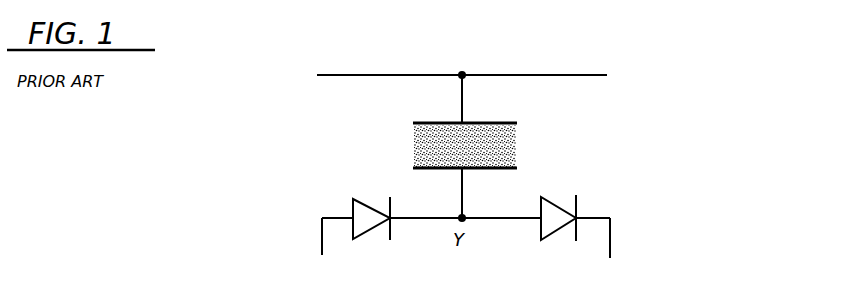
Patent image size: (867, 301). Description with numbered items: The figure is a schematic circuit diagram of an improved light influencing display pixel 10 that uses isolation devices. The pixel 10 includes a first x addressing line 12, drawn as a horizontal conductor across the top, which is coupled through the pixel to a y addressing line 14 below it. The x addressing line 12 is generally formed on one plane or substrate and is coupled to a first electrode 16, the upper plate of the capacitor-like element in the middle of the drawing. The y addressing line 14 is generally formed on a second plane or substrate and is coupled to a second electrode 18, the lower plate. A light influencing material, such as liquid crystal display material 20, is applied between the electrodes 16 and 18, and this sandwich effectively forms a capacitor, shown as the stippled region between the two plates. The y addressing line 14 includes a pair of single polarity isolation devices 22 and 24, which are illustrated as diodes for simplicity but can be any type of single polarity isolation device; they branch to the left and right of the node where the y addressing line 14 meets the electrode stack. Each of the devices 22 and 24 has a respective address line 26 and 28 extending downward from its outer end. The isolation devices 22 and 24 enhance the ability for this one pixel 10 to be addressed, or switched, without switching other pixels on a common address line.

The light influencing display pixel 10 is at (655, 143).
The first x addressing line 12 is at (520, 75).
The y addressing line 14 is at (462, 198).
The first electrode 16 is at (511, 123).
The second electrode 18 is at (437, 172).
The liquid crystal display material 20 is at (500, 142).
The single polarity isolation device 22 is at (373, 226).
The single polarity isolation device 24 is at (560, 226).
The address line 26 is at (317, 251).
The address line 28 is at (602, 253).